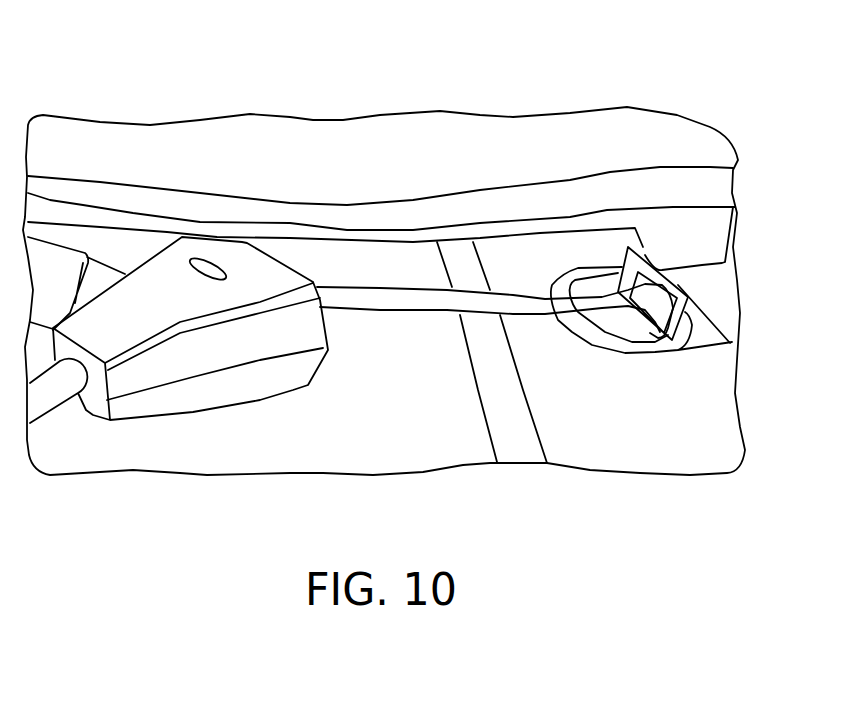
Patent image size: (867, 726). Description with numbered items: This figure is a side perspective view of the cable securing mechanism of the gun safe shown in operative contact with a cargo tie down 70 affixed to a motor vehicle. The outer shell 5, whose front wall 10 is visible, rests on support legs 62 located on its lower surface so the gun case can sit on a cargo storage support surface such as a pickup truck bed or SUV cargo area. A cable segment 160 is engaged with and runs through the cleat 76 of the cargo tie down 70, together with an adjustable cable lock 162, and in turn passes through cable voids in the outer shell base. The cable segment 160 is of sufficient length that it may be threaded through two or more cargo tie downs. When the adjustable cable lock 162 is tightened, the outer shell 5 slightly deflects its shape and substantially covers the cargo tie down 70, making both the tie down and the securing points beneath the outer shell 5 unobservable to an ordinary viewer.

The outer shell 5 is at (442, 86).
The front wall 10 is at (343, 127).
The support legs 62 is at (700, 233).
The cargo tie down 70 is at (713, 337).
The cleat 76 is at (678, 300).
The cable segment 160 is at (468, 303).
The adjustable cable lock 162 is at (198, 362).